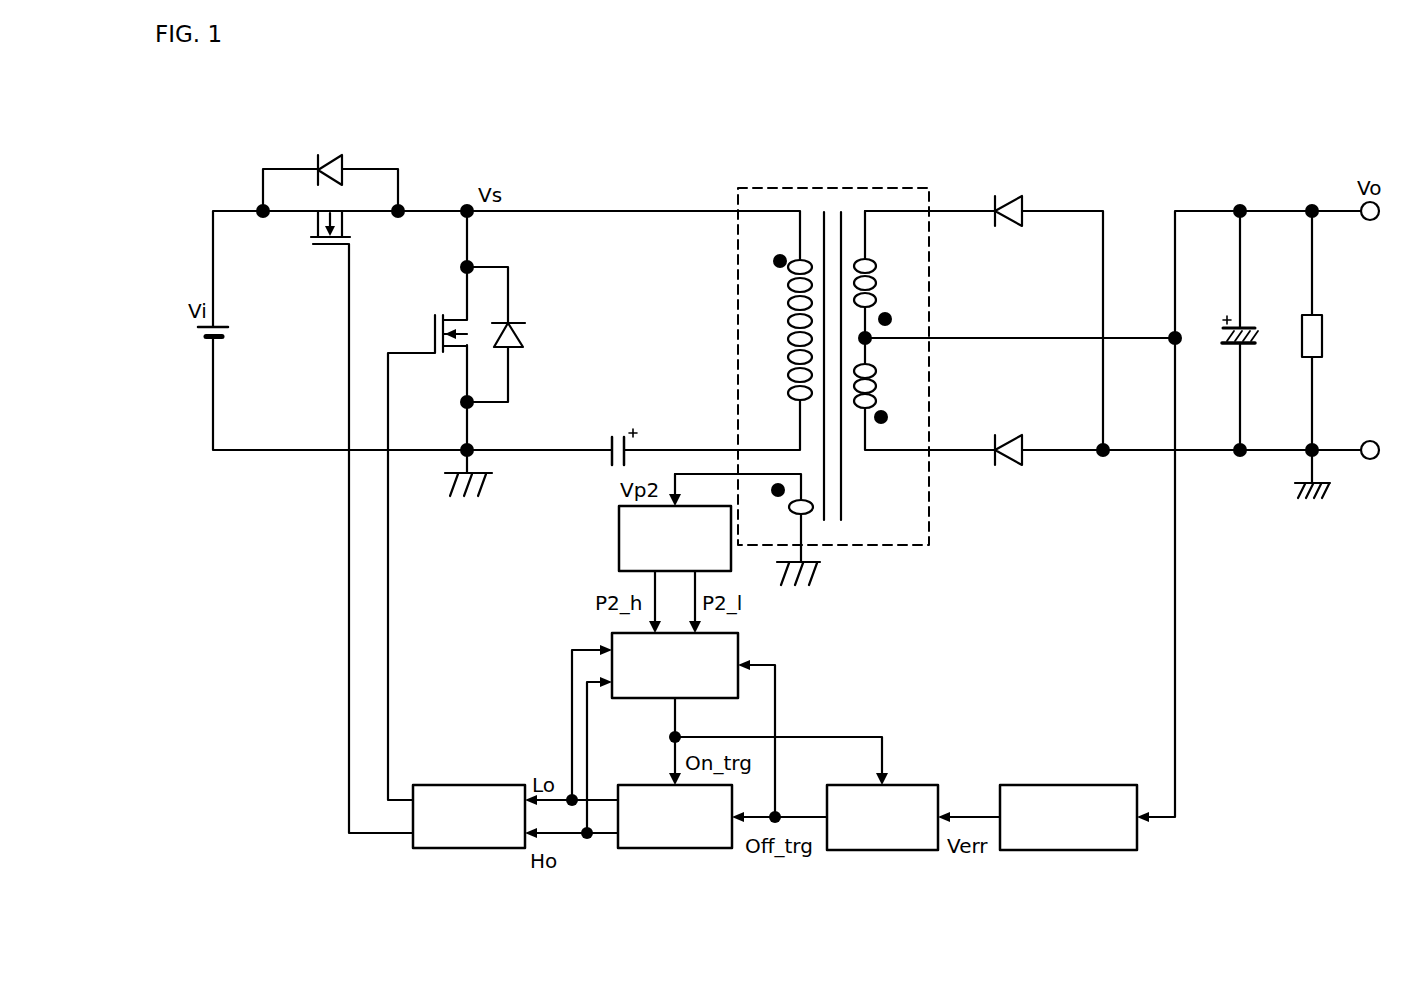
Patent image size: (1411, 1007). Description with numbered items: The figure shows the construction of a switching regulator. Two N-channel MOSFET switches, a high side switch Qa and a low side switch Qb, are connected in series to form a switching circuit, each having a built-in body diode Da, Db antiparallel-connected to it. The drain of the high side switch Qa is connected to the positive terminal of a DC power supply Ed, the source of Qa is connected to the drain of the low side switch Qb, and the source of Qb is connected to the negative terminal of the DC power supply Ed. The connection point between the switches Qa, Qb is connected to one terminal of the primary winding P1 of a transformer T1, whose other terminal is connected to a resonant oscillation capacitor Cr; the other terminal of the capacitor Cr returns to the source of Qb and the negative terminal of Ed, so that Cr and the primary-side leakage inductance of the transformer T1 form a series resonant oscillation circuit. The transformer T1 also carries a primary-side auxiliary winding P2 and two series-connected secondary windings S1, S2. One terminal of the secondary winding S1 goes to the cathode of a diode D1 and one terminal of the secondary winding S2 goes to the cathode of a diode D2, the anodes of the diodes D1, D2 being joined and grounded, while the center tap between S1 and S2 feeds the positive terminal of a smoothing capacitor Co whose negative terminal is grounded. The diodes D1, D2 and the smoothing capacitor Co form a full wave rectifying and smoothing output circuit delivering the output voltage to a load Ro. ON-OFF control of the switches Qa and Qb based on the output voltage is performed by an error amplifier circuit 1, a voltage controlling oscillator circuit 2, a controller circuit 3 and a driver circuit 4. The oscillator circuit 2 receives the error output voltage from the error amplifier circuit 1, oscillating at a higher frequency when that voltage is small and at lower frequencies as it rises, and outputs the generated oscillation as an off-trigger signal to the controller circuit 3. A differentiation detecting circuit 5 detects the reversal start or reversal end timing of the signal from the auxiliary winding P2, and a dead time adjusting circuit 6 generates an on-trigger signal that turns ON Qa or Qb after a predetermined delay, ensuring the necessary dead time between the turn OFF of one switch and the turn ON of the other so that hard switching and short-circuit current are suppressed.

The error amplifier circuit 1 is at (1061, 785).
The voltage controlling oscillator circuit 2 is at (912, 785).
The controller circuit 3 is at (633, 785).
The driver circuit 4 is at (463, 785).
The differentiation detecting circuit 5 is at (619, 537).
The dead time adjusting circuit 6 is at (612, 638).
The DC power supply Ed is at (230, 334).
The body diode Da is at (330, 168).
The high side switch Qa is at (362, 522).
The low side switch Qb is at (431, 505).
The body diode Db is at (515, 334).
The resonant oscillation capacitor Cr is at (620, 437).
The transformer T1 is at (802, 372).
The primary winding P1 is at (783, 327).
The auxiliary winding P2 is at (747, 529).
The secondary winding S1 is at (879, 268).
The secondary winding S2 is at (879, 394).
The diode D1 is at (1009, 198).
The diode D2 is at (1009, 436).
The smoothing capacitor Co is at (1255, 330).
The load Ro is at (1325, 354).